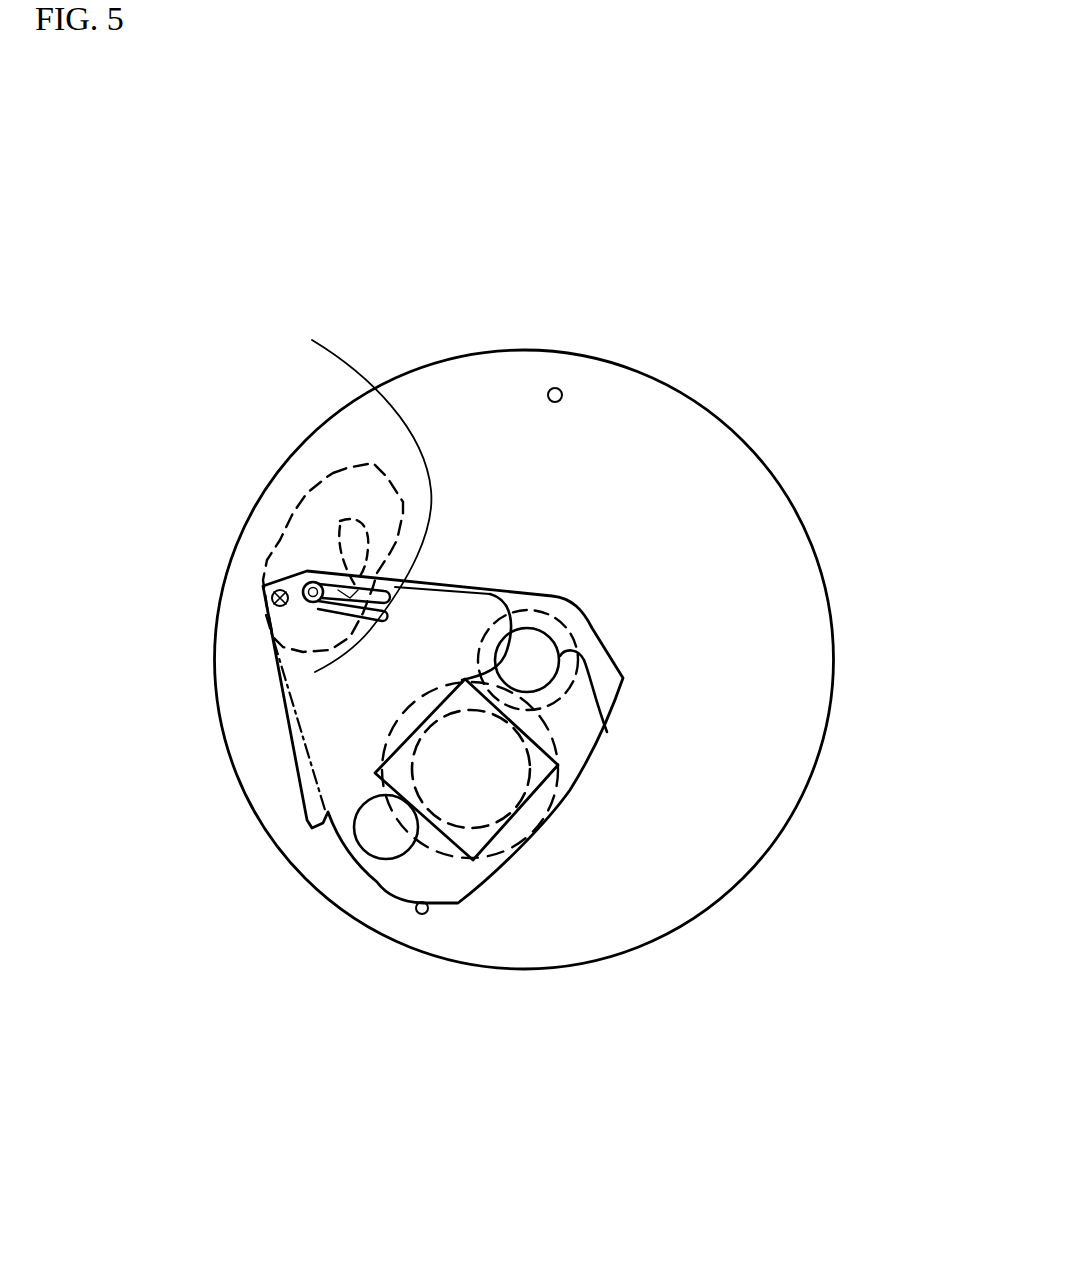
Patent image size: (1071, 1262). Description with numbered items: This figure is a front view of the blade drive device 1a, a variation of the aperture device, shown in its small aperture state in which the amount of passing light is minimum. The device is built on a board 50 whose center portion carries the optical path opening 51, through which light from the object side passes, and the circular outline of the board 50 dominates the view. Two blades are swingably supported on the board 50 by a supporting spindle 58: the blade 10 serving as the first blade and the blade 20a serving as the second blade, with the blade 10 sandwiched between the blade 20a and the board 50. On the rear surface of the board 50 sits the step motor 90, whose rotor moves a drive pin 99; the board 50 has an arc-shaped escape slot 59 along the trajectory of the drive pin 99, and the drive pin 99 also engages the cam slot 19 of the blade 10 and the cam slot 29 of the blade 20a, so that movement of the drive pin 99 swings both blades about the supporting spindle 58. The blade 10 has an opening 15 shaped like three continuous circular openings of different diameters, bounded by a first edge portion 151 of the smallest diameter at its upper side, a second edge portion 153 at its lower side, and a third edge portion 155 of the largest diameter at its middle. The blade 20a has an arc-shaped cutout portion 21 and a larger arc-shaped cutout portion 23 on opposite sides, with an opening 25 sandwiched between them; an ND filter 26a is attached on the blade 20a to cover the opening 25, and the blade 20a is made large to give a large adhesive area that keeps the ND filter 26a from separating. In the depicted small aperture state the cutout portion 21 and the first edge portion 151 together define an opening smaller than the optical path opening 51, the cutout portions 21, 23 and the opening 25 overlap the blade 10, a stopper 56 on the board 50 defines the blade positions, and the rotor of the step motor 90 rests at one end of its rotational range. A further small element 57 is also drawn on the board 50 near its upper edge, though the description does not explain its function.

The blade drive device 1a is at (298, 270).
The blade 10 is at (615, 711).
The opening 15 is at (552, 760).
The cam slot 19 is at (358, 496).
The blade 20a is at (285, 732).
The cutout portion 21 is at (528, 690).
The cutout portion 23 is at (357, 830).
The opening 25 is at (470, 777).
The ND filter 26a is at (495, 790).
The cam slot 29 is at (335, 665).
The board 50 is at (781, 488).
The optical path opening 51 is at (543, 617).
The stopper 56 is at (421, 913).
The pin 57 is at (557, 388).
The supporting spindle 58 is at (272, 596).
The escape slot 59 is at (340, 522).
The step motor 90 is at (331, 475).
The drive pin 99 is at (310, 588).
The first edge portion 151 is at (538, 642).
The second edge portion 153 is at (405, 817).
The third edge portion 155 is at (550, 825).